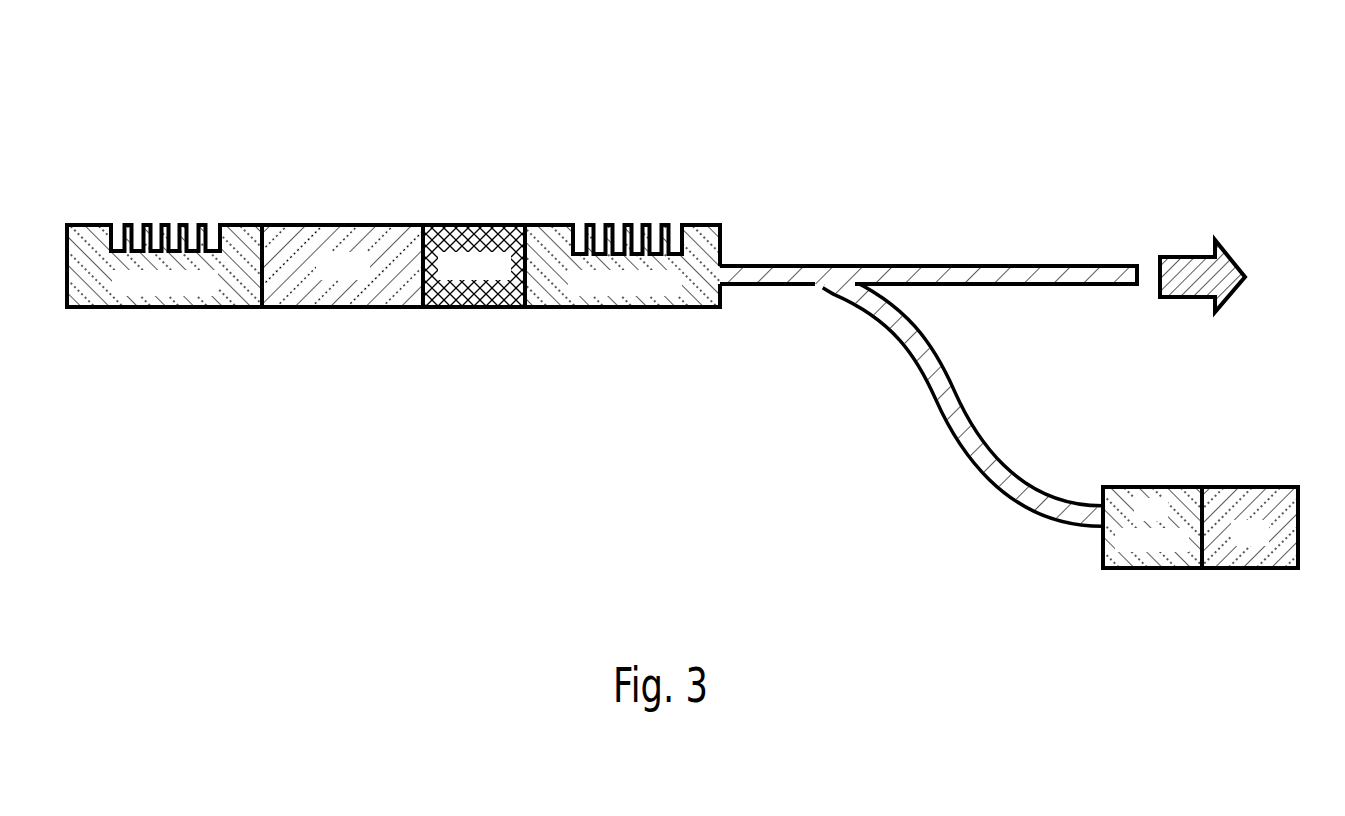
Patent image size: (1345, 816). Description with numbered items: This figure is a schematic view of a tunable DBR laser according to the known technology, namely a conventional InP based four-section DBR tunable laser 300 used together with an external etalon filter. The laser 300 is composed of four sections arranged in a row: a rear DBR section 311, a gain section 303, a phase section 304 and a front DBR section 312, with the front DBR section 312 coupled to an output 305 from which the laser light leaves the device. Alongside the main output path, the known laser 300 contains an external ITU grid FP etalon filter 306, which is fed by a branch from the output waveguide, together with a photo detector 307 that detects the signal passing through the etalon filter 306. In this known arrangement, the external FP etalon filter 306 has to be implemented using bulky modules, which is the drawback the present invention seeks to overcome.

The 4-section DBR tunable laser 300 is at (1338, 85).
The rear DBR section 311 is at (164, 224).
The gain section 303 is at (340, 224).
The phase section 304 is at (470, 224).
The front DBR section 312 is at (624, 224).
The output 305 is at (1186, 256).
The external ITU grid FP etalon filter 306 is at (1148, 486).
The photo detector 307 is at (1247, 486).